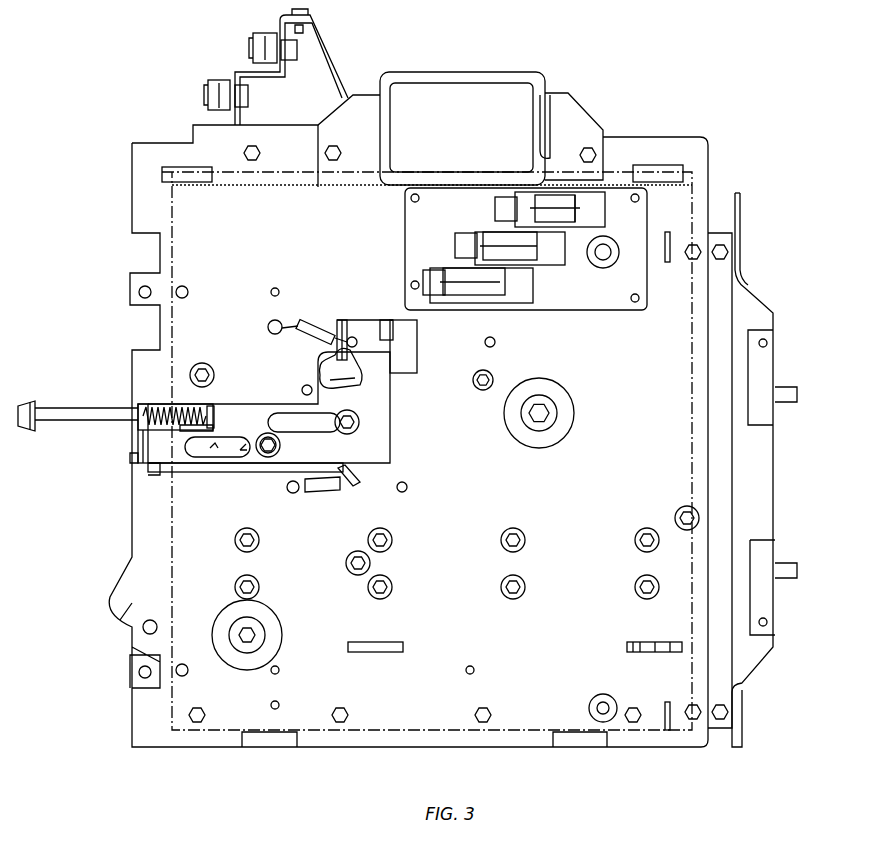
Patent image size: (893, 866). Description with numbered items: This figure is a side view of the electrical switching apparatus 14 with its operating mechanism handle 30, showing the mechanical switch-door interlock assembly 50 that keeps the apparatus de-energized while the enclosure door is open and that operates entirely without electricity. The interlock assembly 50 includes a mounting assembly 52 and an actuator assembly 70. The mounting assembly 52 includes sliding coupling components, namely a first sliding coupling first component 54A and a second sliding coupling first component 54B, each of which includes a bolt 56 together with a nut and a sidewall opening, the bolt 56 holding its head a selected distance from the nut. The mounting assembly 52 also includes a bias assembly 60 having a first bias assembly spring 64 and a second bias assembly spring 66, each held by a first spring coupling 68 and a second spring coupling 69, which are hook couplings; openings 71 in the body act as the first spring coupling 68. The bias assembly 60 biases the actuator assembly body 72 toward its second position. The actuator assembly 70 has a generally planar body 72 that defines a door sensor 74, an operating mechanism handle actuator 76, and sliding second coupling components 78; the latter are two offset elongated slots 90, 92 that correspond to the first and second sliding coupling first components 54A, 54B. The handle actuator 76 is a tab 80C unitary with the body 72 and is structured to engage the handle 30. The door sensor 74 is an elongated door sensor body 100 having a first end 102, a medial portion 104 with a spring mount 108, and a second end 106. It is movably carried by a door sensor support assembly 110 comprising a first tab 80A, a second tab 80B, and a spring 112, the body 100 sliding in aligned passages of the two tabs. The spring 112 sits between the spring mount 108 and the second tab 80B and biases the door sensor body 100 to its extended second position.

The electrical switching apparatus 14 is at (303, 173).
The operating mechanism handle 30 is at (338, 320).
The mechanical switch-door interlock assembly 50 is at (433, 453).
The mounting assembly 52 is at (280, 525).
The first sliding coupling first component 54A is at (268, 458).
The second sliding coupling first component 54B is at (362, 420).
The bolt 56 is at (281, 445).
The bias assembly 60 is at (325, 565).
The first bias assembly spring 64 is at (340, 495).
The second bias assembly spring 66 is at (312, 326).
The first spring coupling 68 is at (356, 346).
The second spring coupling 69 is at (268, 330).
The actuator assembly 70 is at (180, 447).
The openings 71 is at (390, 355).
The actuator assembly body 72 is at (385, 438).
The door sensor 74 is at (65, 410).
The operating mechanism handle actuator 76 is at (346, 320).
The sliding second coupling components 78 is at (243, 446).
The first tab 80A is at (135, 436).
The second tab 80B is at (210, 405).
The tab 80C is at (322, 368).
The elongated slot 90 is at (213, 445).
The elongated slot 92 is at (290, 422).
The door sensor body 100 is at (78, 414).
The first end 102 is at (42, 408).
The medial portion 104 is at (140, 408).
The second end 106 is at (197, 405).
The spring mount 108 is at (130, 455).
The door sensor support assembly 110 is at (133, 444).
The spring 112 is at (158, 472).